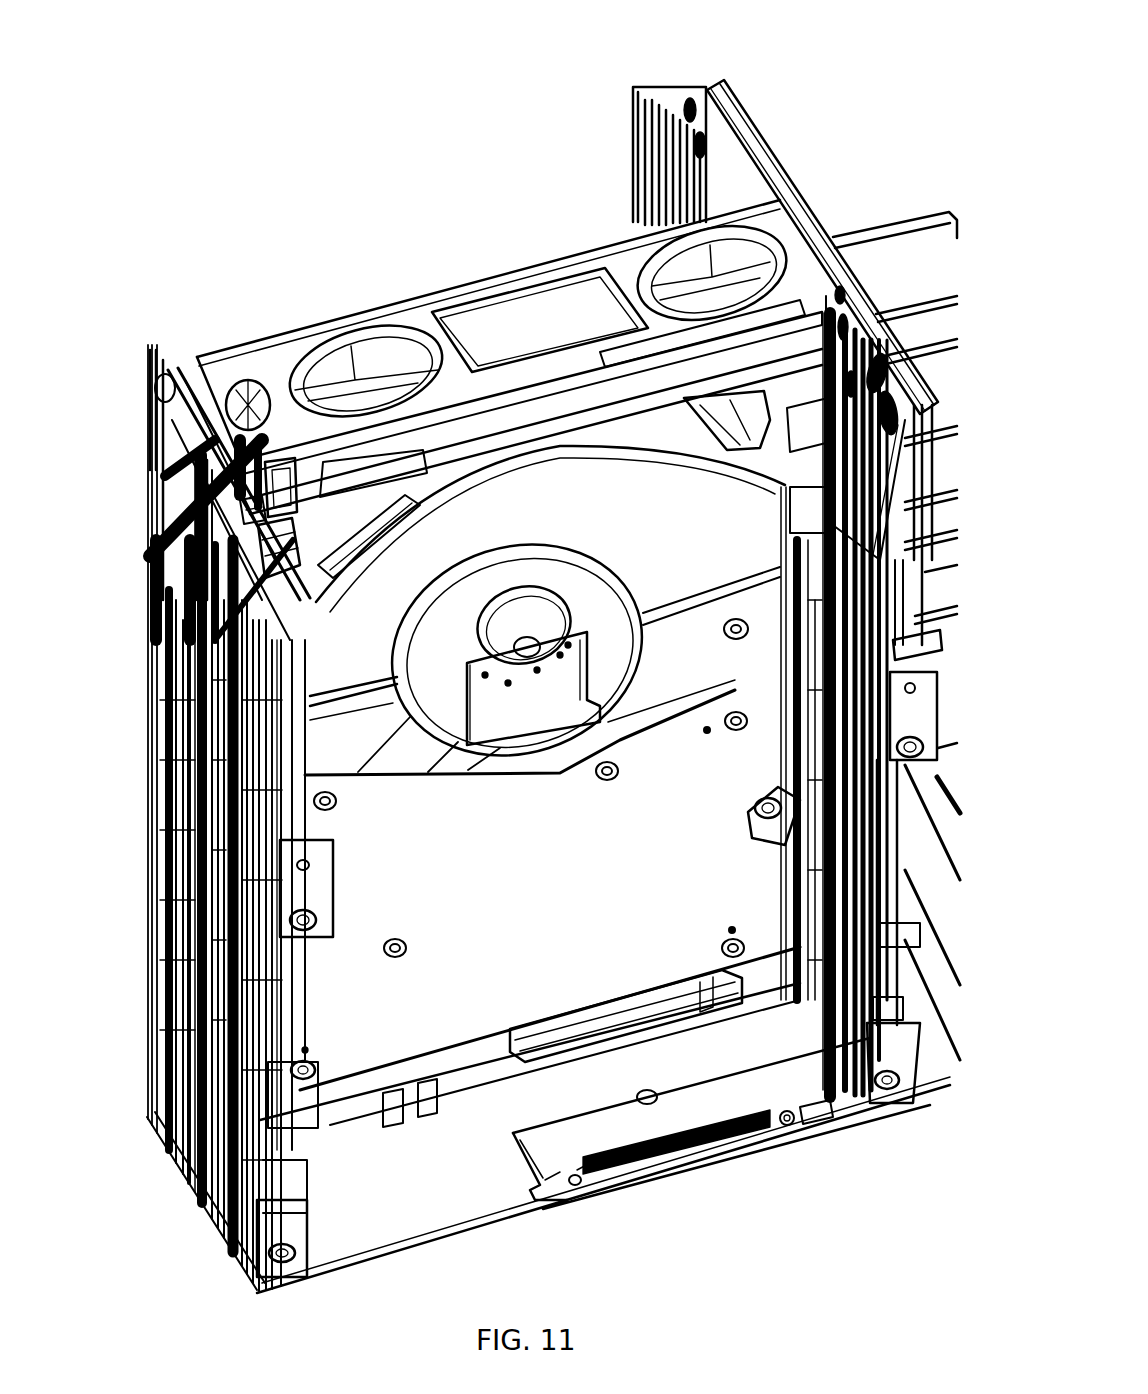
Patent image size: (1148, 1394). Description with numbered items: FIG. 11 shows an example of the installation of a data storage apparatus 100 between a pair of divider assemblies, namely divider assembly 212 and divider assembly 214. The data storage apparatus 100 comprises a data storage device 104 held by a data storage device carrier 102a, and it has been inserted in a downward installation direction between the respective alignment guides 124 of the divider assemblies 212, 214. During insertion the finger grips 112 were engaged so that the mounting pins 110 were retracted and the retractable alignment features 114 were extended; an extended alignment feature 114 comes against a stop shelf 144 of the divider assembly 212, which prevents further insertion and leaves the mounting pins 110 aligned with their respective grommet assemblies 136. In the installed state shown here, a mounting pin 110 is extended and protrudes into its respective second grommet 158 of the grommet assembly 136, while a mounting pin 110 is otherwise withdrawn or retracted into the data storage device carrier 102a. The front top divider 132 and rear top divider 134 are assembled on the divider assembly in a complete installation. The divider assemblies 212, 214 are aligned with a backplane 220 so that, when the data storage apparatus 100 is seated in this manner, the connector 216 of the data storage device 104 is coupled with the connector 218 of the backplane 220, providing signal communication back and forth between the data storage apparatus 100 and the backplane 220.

The data storage apparatus 100 is at (230, 172).
The data storage device carrier 102a is at (488, 278).
The data storage device 104 is at (390, 1048).
The mounting pins 110 is at (177, 423).
The finger grips 112 is at (410, 325).
The retractable alignment features 114 is at (263, 483).
The alignment guides 124 is at (760, 838).
The front top divider 132 is at (711, 86).
The rear top divider 134 is at (795, 190).
The grommet assembly 136 is at (260, 533).
The stop shelf 144 is at (257, 500).
The second grommet 158 is at (150, 378).
The divider assembly 212 is at (114, 816).
The divider assembly 214 is at (829, 236).
The connector 216 is at (562, 1010).
The connector 218 is at (547, 1033).
The backplane 220 is at (680, 1055).